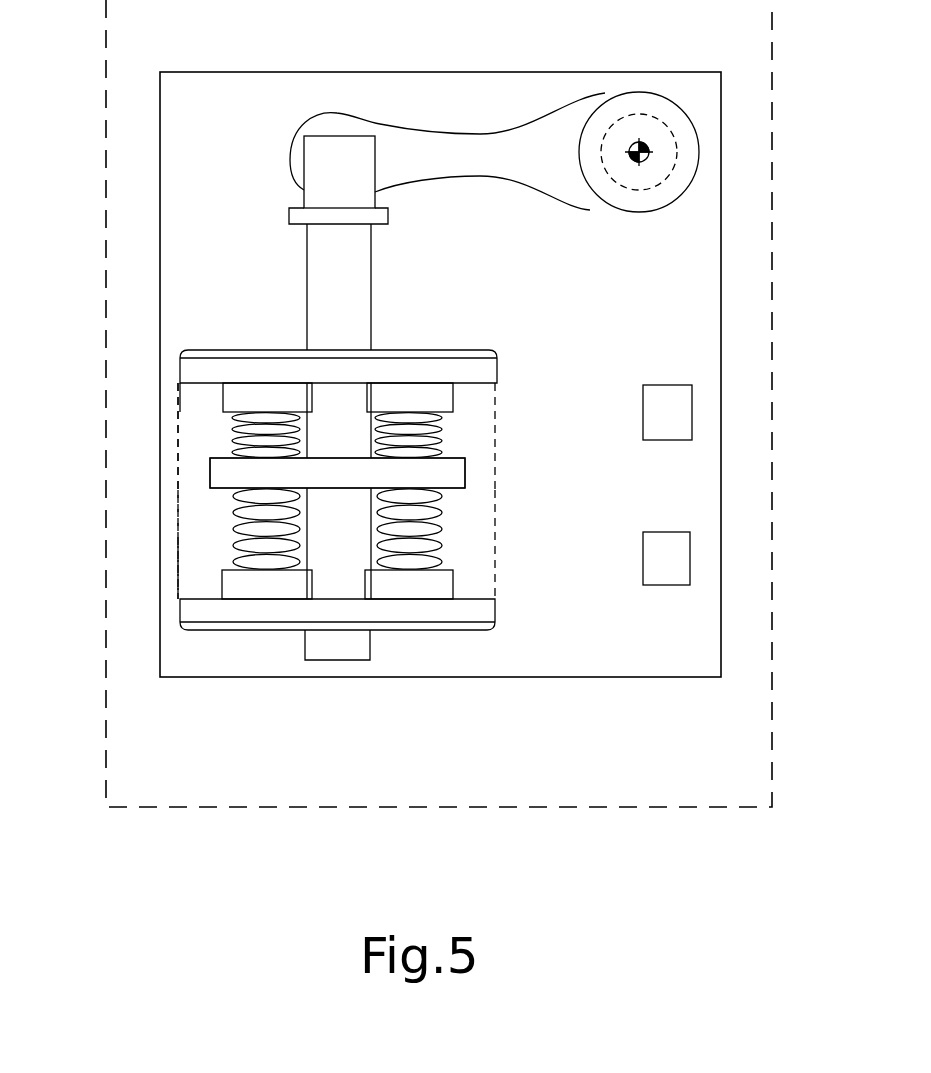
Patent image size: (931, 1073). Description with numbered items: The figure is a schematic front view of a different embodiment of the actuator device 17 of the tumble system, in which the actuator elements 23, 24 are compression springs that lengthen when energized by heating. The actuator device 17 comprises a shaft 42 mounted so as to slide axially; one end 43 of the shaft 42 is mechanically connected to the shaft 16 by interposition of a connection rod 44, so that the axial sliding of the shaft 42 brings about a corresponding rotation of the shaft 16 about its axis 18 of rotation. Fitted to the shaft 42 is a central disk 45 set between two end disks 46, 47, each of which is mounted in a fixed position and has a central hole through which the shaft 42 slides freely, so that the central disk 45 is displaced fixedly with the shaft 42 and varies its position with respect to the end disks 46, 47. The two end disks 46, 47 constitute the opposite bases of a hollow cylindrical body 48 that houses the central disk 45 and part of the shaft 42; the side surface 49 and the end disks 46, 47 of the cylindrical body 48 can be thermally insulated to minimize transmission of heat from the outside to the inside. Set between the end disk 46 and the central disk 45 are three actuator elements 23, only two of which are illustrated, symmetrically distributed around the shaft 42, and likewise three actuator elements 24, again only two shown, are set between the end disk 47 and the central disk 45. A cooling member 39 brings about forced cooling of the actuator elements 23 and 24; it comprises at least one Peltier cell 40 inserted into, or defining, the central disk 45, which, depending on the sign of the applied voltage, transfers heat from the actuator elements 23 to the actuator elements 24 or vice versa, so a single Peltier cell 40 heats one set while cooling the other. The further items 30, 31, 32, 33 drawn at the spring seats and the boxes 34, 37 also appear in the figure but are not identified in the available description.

The shaft 16 is at (648, 115).
The actuator device 17 is at (800, 564).
The axis of rotation 18 is at (648, 157).
The actuator elements 23 is at (176, 433).
The actuator elements 24 is at (176, 536).
The upper spring seat 30 is at (223, 412).
The upper spring 31 is at (232, 450).
The lower spring 32 is at (233, 495).
The lower spring seat 33 is at (222, 566).
The sensor 34 is at (667, 412).
The sensor 37 is at (666, 558).
The cooling member 39 is at (100, 478).
The Peltier cell 40 is at (210, 475).
The shaft 42 is at (362, 288).
The end 43 is at (277, 183).
The connection rod 44 is at (467, 147).
The central disk 45 is at (460, 472).
The end disk 46 is at (490, 365).
The end disk 47 is at (495, 618).
The cylindrical body 48 is at (199, 682).
The side surface 49 is at (176, 558).